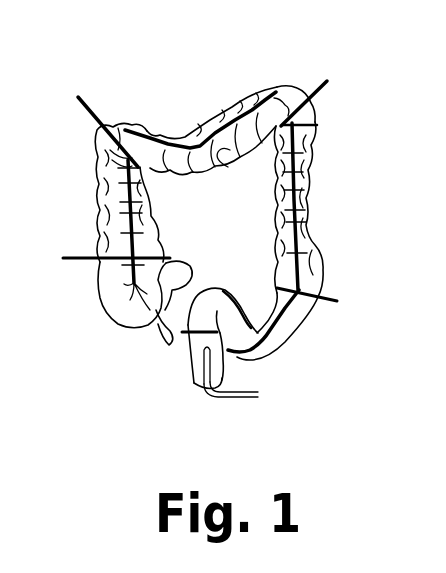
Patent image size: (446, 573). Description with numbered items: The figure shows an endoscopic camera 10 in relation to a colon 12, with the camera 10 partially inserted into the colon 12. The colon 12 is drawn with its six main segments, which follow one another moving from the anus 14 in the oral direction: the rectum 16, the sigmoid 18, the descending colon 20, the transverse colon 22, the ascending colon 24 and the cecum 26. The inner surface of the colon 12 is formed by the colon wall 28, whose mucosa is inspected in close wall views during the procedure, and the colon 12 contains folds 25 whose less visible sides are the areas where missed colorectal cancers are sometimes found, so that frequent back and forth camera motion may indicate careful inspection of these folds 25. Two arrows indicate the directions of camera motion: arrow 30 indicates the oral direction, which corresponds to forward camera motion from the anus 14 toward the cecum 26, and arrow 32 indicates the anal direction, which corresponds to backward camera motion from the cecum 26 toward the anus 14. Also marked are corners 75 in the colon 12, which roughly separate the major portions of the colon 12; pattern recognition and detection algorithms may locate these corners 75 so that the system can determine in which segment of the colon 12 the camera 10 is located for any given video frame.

The endoscopic camera 10 is at (248, 403).
The colon 12 is at (342, 105).
The anus 14 is at (197, 383).
The rectum 16 is at (224, 347).
The sigmoid 18 is at (287, 340).
The descending colon 20 is at (316, 236).
The transverse colon 22 is at (185, 145).
The ascending colon 24 is at (97, 188).
The folds 25 is at (268, 90).
The cecum 26 is at (114, 320).
The colon wall 28 is at (228, 168).
The arrow indicating oral direction 30 is at (359, 268).
The arrow indicating anal direction 32 is at (413, 284).
The corners 75 is at (99, 131).